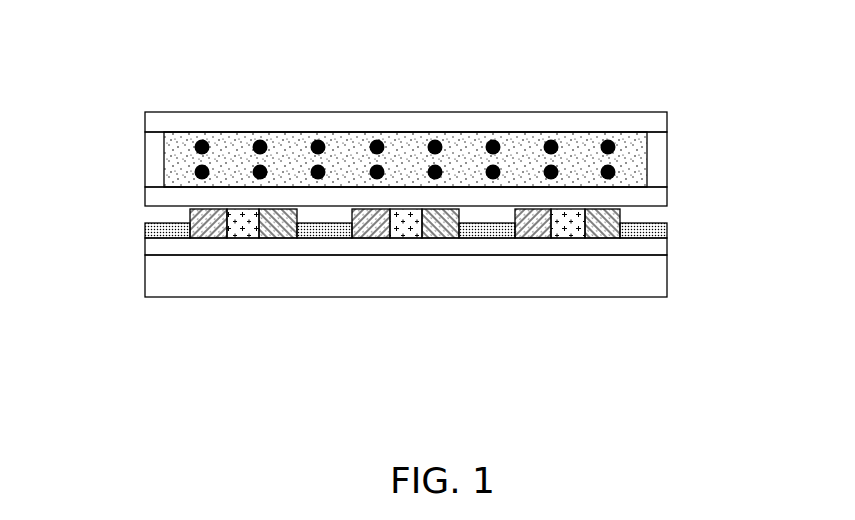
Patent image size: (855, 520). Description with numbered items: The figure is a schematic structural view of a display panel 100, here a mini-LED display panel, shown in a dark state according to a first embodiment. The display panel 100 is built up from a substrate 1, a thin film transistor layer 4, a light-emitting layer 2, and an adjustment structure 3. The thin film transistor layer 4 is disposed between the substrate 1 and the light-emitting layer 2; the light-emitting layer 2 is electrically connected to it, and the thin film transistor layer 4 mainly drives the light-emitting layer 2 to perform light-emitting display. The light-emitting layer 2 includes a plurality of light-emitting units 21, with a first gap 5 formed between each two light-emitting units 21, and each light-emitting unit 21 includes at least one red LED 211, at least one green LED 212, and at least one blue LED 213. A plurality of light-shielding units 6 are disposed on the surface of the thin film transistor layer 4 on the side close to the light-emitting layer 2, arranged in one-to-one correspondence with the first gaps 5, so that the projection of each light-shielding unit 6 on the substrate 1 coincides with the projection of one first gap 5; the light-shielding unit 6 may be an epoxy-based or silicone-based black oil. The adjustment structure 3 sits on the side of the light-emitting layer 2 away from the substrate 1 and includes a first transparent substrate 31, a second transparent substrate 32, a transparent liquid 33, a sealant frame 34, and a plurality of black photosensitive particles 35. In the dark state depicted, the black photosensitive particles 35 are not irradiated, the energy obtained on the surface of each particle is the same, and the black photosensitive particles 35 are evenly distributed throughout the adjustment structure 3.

The display panel 100 is at (122, 102).
The substrate 1 is at (663, 278).
The light-emitting layer 2 is at (406, 231).
The light-emitting unit 21 is at (518, 305).
The red LED 211 is at (435, 230).
The green LED 212 is at (400, 230).
The blue LED 213 is at (365, 230).
The adjustment structure 3 is at (745, 40).
The first transparent substrate 31 is at (665, 193).
The second transparent substrate 32 is at (665, 122).
The transparent liquid 33 is at (628, 143).
The sealant frame 34 is at (653, 163).
The black photosensitive particle 35 is at (613, 138).
The thin film transistor layer 4 is at (663, 250).
The first gap 5 is at (332, 218).
The light-shielding unit 6 is at (332, 228).